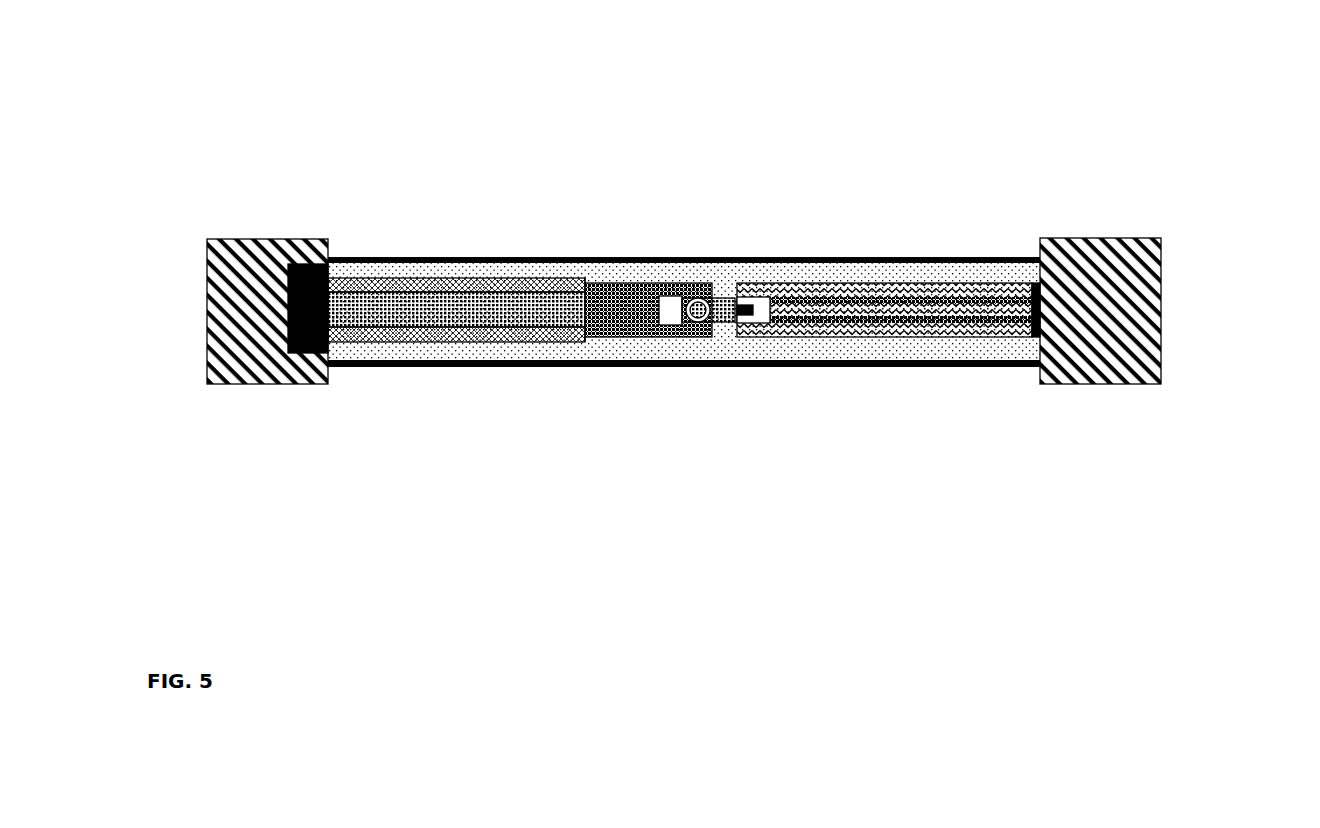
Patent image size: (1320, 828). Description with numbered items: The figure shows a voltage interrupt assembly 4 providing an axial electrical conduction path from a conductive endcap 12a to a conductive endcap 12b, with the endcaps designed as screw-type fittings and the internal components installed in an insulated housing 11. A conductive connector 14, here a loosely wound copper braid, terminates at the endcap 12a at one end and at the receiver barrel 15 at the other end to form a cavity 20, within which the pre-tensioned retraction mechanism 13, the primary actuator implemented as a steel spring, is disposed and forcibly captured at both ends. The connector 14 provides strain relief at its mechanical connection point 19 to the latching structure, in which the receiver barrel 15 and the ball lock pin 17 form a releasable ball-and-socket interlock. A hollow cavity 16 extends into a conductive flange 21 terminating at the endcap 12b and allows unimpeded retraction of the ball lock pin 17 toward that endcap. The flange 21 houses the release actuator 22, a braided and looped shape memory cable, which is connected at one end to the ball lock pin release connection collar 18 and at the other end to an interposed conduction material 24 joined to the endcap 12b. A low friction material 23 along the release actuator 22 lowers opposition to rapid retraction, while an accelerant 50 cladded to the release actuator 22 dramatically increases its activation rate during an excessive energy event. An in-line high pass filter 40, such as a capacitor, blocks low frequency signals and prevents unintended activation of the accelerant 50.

The voltage interrupt assembly 4 is at (1195, 158).
The insulated housing 11 is at (857, 265).
The conductive endcap 12a is at (208, 310).
The conductive endcap 12b is at (1162, 308).
The retraction mechanism 13 is at (363, 308).
The conductive connector 14 is at (485, 338).
The receiver barrel 15 is at (632, 287).
The hollow cavity 16 is at (668, 305).
The ball lock pin 17 is at (728, 300).
The ball lock pin release connection collar 18 is at (747, 301).
The mechanical connection point 19 is at (585, 281).
The cavity 20 is at (393, 276).
The conductive flange 21 is at (970, 328).
The release actuator 22 is at (865, 315).
The low friction material 23 is at (912, 300).
The interposed conduction material 24 is at (1033, 282).
The high pass filter 40 is at (297, 262).
The accelerant 50 is at (887, 301).